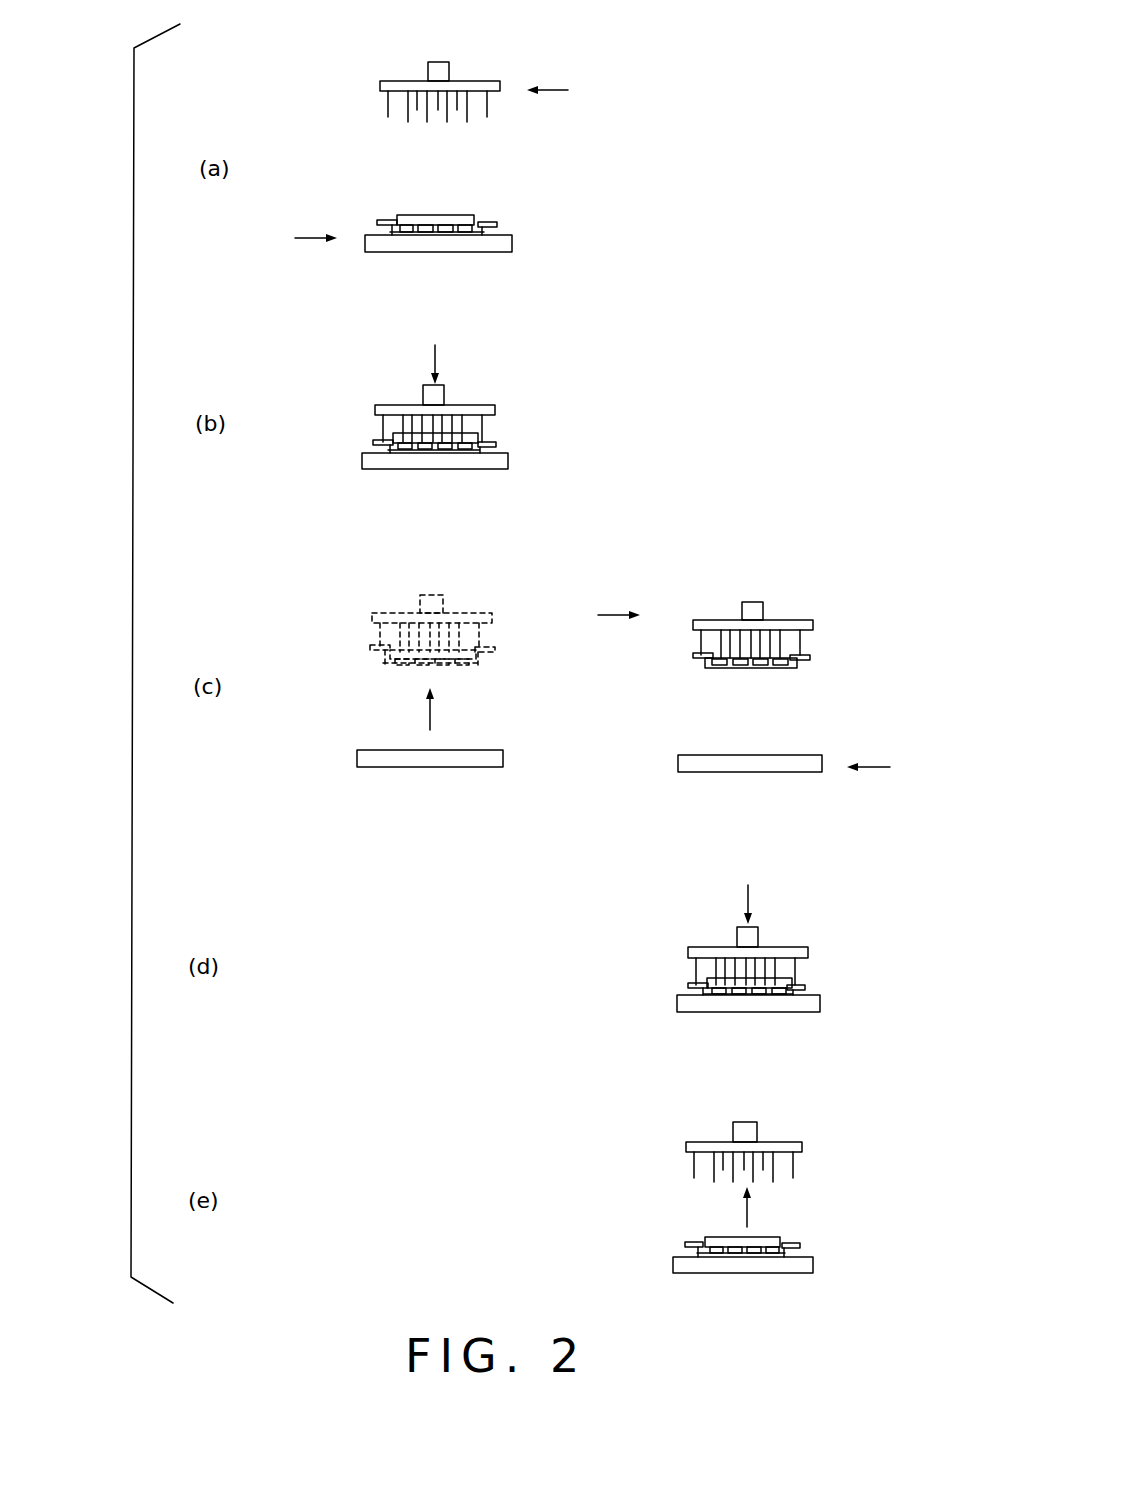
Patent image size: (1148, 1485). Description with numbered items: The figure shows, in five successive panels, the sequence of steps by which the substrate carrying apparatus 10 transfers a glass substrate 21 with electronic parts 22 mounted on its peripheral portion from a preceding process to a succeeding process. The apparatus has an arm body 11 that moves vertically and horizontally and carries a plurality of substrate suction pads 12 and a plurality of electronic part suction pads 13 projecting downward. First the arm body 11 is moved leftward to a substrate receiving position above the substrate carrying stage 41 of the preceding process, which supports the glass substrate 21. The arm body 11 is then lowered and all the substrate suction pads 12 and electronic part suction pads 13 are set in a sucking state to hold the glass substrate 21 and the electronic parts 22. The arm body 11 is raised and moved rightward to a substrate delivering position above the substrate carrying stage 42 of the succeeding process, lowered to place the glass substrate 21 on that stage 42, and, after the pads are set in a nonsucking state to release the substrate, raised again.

The substrate carrying apparatus 10 is at (615, 602).
The arm body 11 is at (478, 81).
The substrate suction pads 12 is at (416, 111).
The electronic part suction pads 13 is at (385, 108).
The glass substrate 21 is at (452, 214).
The electronic parts 22 is at (490, 222).
The substrate carrying stage 41 is at (365, 241).
The substrate carrying stage 42 is at (678, 760).